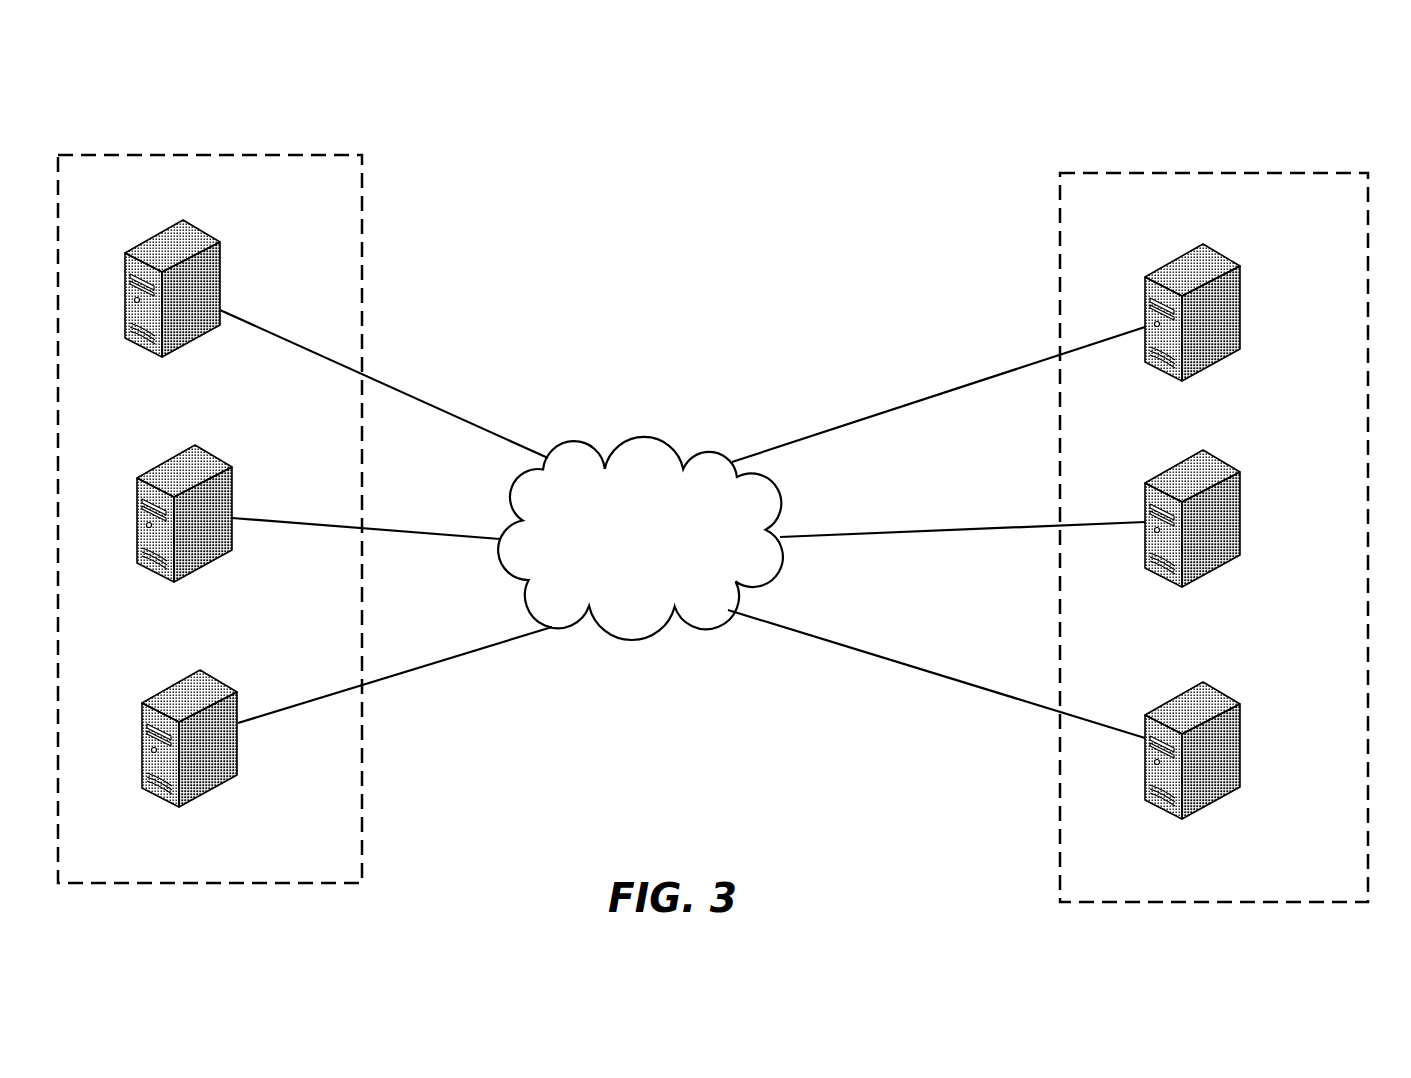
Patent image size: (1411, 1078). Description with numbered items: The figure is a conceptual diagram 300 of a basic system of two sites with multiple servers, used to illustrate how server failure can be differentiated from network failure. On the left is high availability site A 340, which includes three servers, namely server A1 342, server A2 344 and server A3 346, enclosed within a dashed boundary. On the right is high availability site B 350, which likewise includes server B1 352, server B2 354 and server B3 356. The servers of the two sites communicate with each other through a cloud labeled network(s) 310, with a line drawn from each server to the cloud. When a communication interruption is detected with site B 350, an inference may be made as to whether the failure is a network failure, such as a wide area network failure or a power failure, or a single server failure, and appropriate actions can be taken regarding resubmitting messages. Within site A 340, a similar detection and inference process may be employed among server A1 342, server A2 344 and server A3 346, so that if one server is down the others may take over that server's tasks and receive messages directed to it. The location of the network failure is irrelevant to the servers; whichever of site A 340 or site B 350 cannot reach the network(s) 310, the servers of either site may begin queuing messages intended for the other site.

The diagram 300 is at (1240, 93).
The network(s) 310 is at (645, 423).
The site A 340 is at (388, 210).
The server A1 342 is at (187, 207).
The server A2 344 is at (198, 432).
The server A3 346 is at (205, 657).
The site B 350 is at (1040, 215).
The server B1 352 is at (1205, 230).
The server B2 354 is at (1205, 438).
The server B3 356 is at (1205, 668).